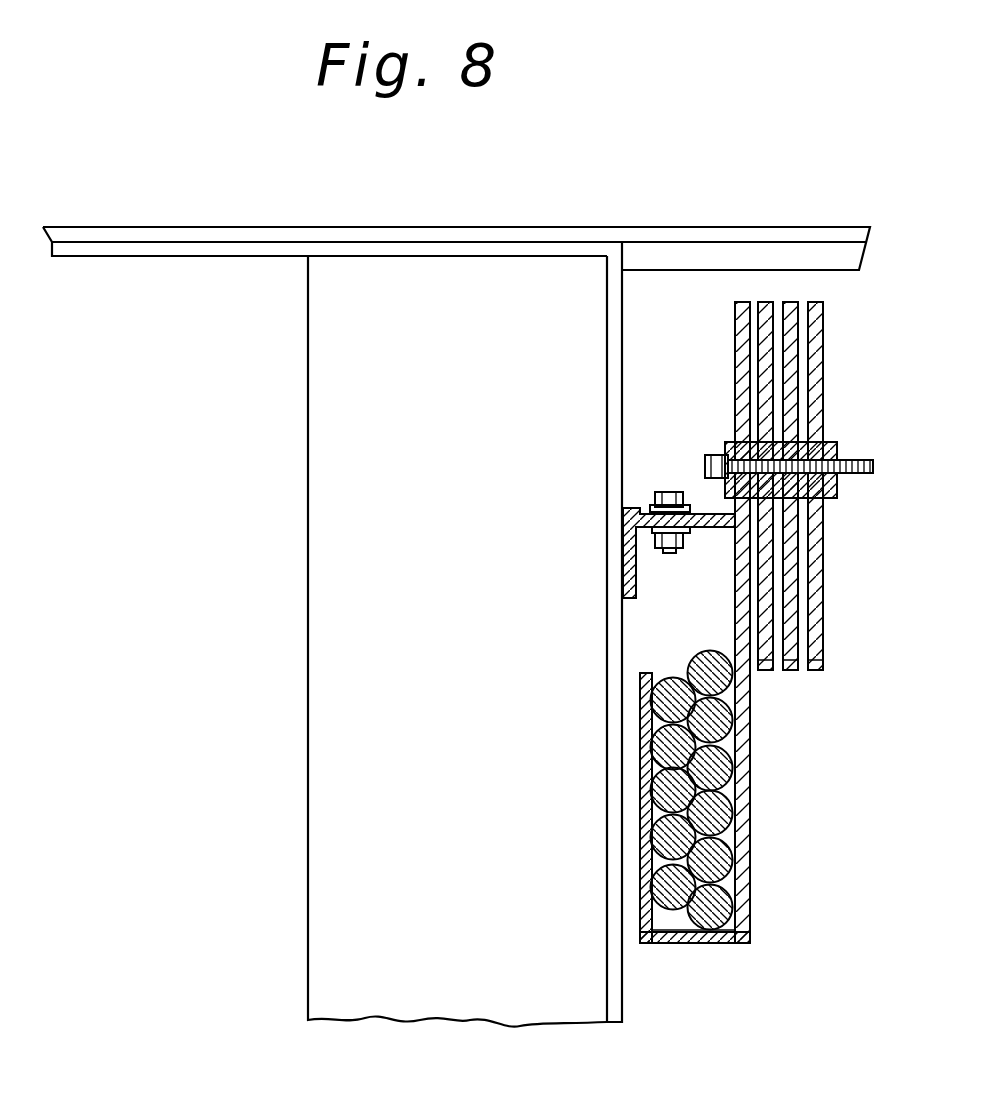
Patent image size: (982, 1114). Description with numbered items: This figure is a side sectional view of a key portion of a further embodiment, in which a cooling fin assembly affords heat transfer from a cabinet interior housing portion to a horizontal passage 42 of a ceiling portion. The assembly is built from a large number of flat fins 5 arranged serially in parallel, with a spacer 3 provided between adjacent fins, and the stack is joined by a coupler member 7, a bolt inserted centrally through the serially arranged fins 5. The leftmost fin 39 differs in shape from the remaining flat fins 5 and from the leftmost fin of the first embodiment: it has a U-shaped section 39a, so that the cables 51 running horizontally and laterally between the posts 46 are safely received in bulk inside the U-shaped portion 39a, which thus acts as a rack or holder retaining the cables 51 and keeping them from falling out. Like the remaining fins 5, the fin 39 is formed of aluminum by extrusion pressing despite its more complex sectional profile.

The upper guide rail 42 is at (692, 300).
The panel 46 is at (488, 990).
The plates 3 is at (754, 505).
The plate lower ends 5 is at (767, 672).
The clamping bolt 7 is at (858, 460).
The support plate 39 is at (735, 614).
The bottom of support plate 39a is at (732, 945).
The balls 51 is at (685, 918).